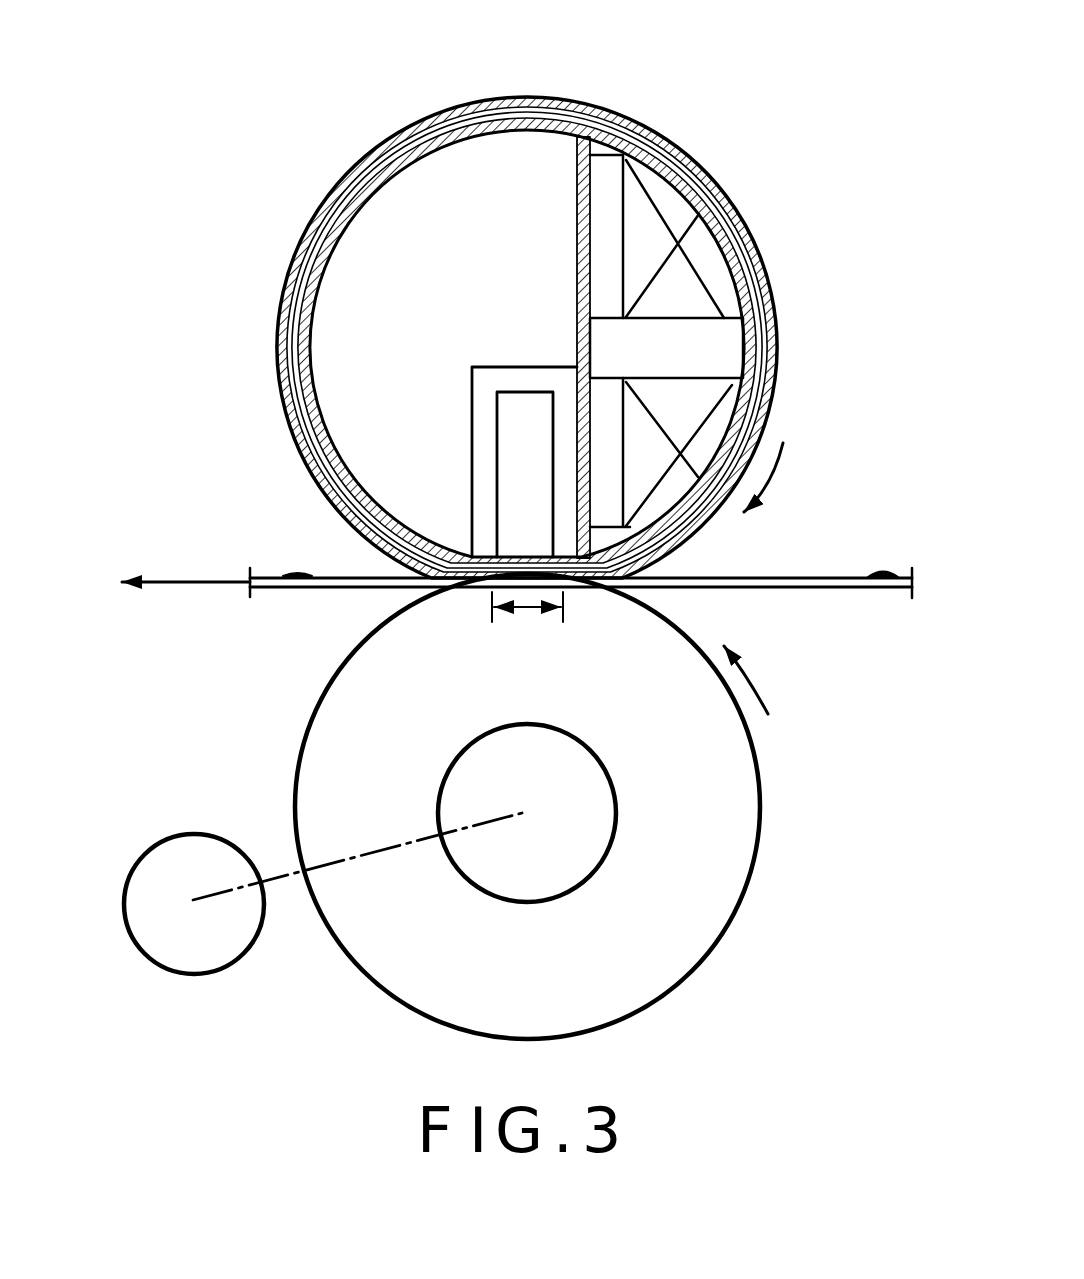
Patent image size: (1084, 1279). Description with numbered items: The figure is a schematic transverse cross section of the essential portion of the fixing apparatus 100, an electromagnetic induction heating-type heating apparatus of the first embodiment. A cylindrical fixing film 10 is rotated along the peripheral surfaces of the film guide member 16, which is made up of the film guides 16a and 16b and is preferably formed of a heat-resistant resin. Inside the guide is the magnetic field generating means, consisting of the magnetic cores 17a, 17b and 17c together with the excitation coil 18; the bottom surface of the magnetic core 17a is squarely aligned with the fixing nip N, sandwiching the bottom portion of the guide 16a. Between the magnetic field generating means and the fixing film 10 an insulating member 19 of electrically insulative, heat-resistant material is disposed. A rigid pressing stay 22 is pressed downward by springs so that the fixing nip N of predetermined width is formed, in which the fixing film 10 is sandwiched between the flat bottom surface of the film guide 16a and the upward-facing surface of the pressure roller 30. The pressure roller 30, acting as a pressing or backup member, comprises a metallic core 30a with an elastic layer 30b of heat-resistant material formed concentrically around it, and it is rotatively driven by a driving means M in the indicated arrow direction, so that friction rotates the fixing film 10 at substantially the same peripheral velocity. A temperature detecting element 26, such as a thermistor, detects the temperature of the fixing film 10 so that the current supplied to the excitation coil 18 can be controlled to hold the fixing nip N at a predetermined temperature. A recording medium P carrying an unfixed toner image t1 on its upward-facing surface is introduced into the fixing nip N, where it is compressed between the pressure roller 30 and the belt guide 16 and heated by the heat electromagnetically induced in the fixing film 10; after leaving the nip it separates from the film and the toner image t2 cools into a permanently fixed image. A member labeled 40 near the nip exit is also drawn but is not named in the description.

The fixing apparatus 100 is at (296, 216).
The fixing film 10 is at (386, 142).
The film guide member 16 is at (436, 337).
The film guide 16a is at (282, 374).
The film guide 16b is at (285, 302).
The magnetic core 17a is at (600, 340).
The magnetic core 17b is at (613, 518).
The magnetic core 17c is at (600, 233).
The excitation coil 18 is at (683, 415).
The insulating member 19 is at (581, 107).
The rigid pressing stay 22 is at (480, 418).
The temperature detecting element 26 is at (393, 549).
The pressure roller 30 is at (614, 811).
The metallic core 30a is at (583, 821).
The elastic layer 30b is at (632, 959).
The guide member 40 is at (447, 595).
The driving means M is at (186, 857).
The fixing nip N is at (527, 622).
The recording medium P is at (782, 591).
The toner image t1 is at (890, 572).
The toner image t2 is at (283, 574).